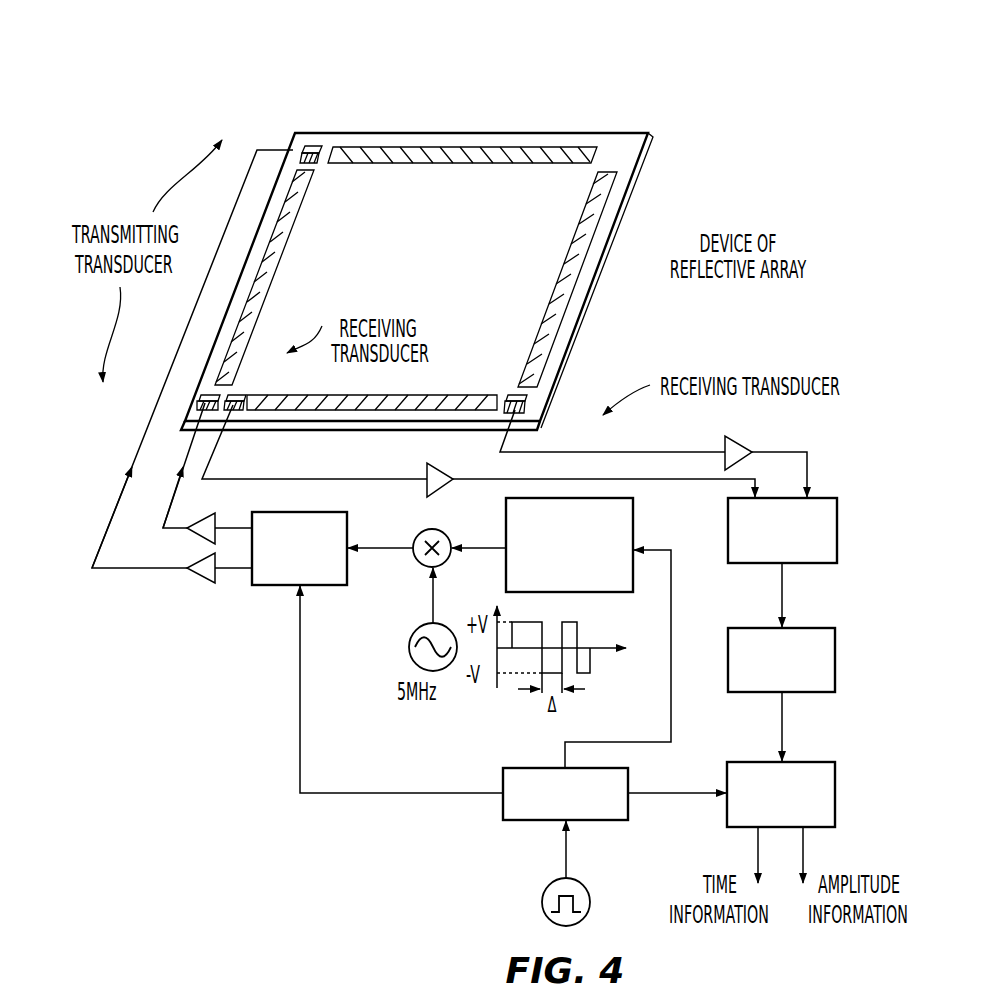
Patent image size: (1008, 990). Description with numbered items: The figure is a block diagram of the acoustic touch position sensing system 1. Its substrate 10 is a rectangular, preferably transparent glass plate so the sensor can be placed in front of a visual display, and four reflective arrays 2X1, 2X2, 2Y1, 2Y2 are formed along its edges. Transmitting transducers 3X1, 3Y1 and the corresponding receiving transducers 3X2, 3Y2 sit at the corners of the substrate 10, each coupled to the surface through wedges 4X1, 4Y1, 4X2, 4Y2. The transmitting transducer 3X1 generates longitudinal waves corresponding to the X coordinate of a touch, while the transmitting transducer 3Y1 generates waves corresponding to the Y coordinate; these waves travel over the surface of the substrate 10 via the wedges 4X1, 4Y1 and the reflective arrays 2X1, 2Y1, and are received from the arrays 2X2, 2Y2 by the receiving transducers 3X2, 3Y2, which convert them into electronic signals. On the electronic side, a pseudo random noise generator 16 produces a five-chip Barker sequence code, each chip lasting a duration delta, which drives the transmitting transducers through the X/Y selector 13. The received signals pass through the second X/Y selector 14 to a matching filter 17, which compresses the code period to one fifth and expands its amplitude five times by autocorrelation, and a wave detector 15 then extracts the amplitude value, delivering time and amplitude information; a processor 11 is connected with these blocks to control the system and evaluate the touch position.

The touch position sensing system 1 is at (410, 48).
The substrate 10 is at (620, 133).
The processor 11 is at (530, 820).
The X/Y selector 13 is at (330, 585).
The X/Y selector 14 is at (823, 498).
The wave detector 15 is at (830, 762).
The pseudo random noise generator 16 is at (633, 512).
The matching filter 17 is at (822, 628).
The reflective array 2X1 is at (280, 262).
The reflective array 2X2 is at (581, 272).
The reflective array 2Y1 is at (511, 146).
The reflective array 2Y2 is at (480, 393).
The transmitting transducer 3X1 is at (197, 408).
The transmitting transducer 3Y1 is at (302, 157).
The receiving transducer 3X2 is at (522, 407).
The receiving transducer 3Y2 is at (229, 395).
The wedge 4X1 is at (199, 395).
The wedge 4Y1 is at (305, 146).
The wedge 4X2 is at (527, 396).
The wedge 4Y2 is at (238, 411).